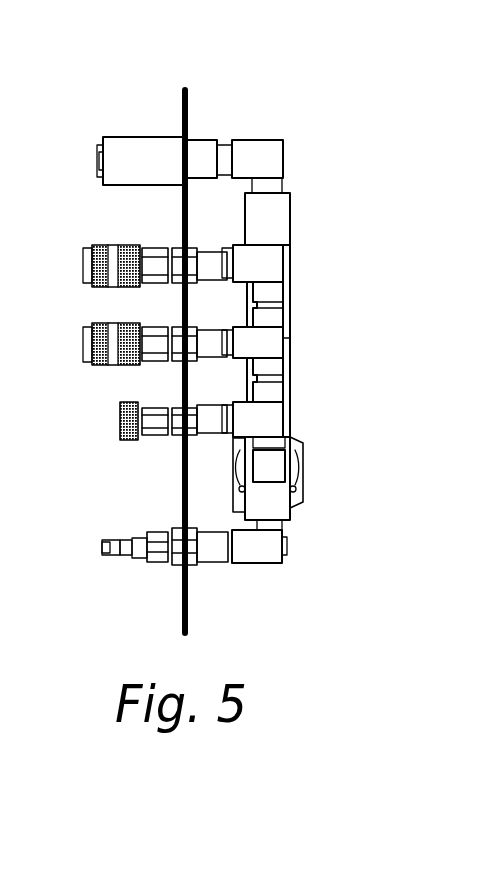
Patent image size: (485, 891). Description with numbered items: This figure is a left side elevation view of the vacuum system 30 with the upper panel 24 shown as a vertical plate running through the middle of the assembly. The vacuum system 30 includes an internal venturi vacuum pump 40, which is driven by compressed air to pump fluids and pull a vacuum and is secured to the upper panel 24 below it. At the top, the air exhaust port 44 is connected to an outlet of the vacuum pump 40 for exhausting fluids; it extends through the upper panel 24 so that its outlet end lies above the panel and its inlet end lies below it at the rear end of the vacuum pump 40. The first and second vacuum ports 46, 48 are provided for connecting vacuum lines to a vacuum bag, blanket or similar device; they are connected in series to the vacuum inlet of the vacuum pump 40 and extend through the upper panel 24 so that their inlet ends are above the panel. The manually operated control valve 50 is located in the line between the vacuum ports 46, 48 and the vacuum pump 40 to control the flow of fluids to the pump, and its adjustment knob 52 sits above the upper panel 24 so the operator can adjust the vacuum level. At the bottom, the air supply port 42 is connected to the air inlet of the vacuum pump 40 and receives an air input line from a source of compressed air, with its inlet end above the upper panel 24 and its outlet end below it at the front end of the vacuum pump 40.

The upper panel 24 is at (180, 118).
The vacuum system 30 is at (333, 362).
The venturi vacuum pump 40 is at (282, 233).
The air supply port 42 is at (135, 565).
The air exhaust port 44 is at (130, 137).
The first vacuum port 46 is at (105, 323).
The second vacuum port 48 is at (115, 245).
The control valve 50 is at (158, 440).
The adjustment knob 52 is at (124, 401).